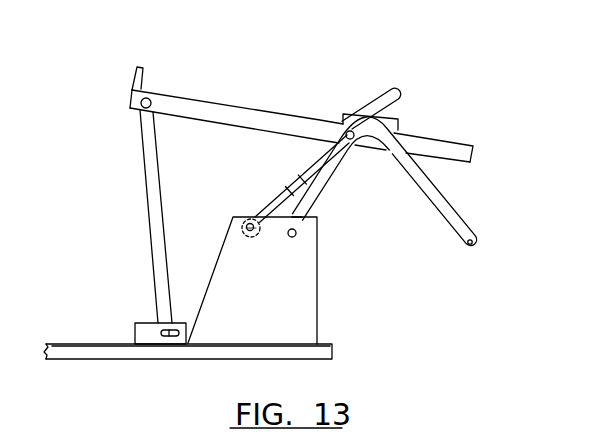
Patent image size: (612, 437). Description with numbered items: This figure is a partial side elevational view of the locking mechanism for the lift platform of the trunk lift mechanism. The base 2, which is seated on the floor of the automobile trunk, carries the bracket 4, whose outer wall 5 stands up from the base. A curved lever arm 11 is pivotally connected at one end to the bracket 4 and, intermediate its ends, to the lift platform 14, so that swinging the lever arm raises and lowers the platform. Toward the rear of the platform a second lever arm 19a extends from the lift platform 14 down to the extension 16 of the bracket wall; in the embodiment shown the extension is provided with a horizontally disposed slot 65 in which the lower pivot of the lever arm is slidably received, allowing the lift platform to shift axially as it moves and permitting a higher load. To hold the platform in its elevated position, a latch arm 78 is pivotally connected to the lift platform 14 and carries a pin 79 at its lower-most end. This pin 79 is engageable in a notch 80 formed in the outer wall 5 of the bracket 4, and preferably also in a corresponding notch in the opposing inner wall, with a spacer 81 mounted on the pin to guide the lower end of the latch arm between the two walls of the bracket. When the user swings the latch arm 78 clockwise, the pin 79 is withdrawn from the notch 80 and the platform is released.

The base 2 is at (258, 352).
The bracket 4 is at (327, 289).
The outer wall 5 is at (310, 253).
The curved lever arm 11 is at (450, 207).
The lift platform 14 is at (212, 104).
The extension 16 is at (140, 330).
The lever arm 19a is at (147, 183).
The slot 65 is at (177, 337).
The latch arm 78 is at (392, 92).
The pin 79 is at (252, 233).
The notch 80 is at (244, 219).
The spacer 81 is at (242, 232).